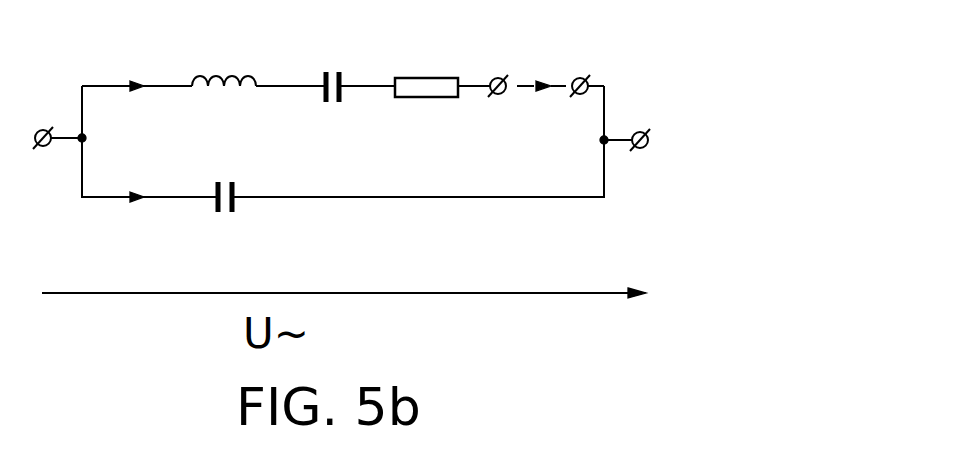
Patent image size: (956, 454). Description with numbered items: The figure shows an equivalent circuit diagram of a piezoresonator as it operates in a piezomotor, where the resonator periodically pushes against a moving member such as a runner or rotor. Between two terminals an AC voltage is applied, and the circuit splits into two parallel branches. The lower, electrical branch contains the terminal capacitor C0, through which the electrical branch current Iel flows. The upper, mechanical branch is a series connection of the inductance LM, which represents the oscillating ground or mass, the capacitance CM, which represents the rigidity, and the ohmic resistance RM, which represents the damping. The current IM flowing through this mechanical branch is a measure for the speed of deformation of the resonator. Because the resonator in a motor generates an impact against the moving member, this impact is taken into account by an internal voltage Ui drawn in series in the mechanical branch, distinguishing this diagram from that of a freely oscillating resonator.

The mechanical branch current IM is at (121, 57).
The inductance LM is at (224, 53).
The capacitance CM is at (340, 61).
The ohmic resistance RM is at (426, 59).
The internal voltage Ui is at (539, 60).
The electrical branch current I_el Iel is at (121, 222).
The terminal capacitor C0 is at (246, 219).